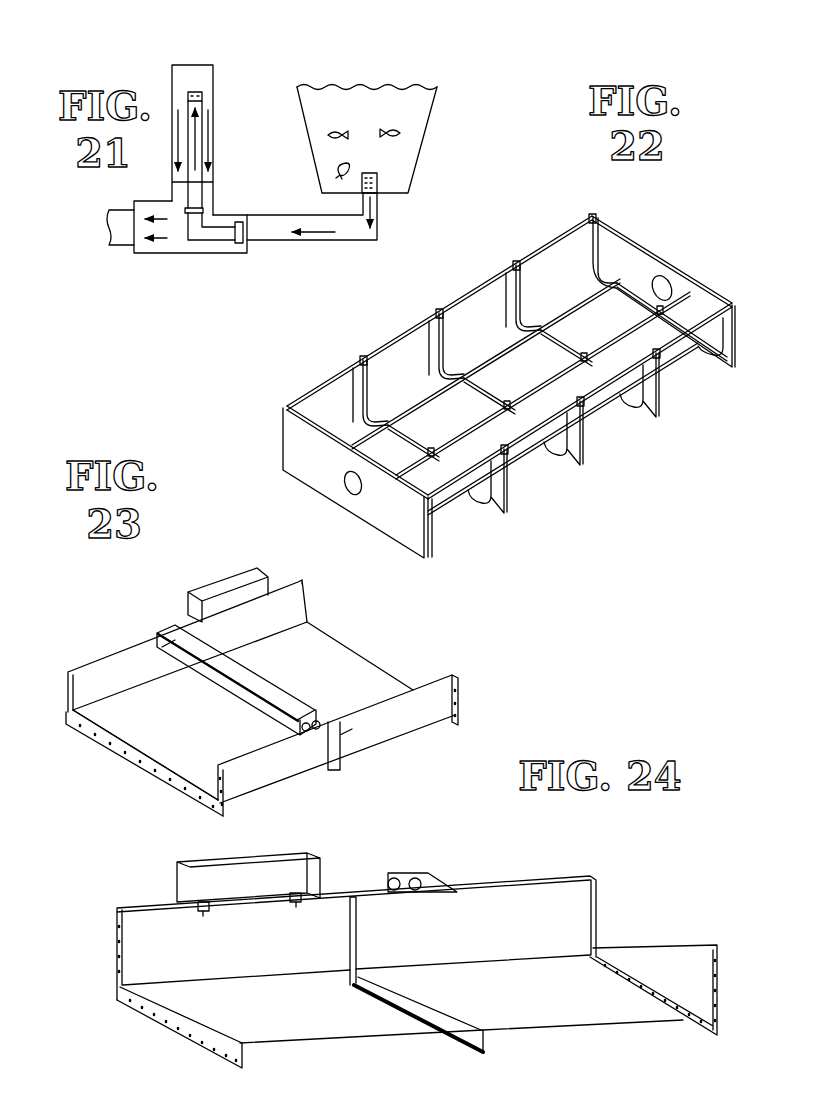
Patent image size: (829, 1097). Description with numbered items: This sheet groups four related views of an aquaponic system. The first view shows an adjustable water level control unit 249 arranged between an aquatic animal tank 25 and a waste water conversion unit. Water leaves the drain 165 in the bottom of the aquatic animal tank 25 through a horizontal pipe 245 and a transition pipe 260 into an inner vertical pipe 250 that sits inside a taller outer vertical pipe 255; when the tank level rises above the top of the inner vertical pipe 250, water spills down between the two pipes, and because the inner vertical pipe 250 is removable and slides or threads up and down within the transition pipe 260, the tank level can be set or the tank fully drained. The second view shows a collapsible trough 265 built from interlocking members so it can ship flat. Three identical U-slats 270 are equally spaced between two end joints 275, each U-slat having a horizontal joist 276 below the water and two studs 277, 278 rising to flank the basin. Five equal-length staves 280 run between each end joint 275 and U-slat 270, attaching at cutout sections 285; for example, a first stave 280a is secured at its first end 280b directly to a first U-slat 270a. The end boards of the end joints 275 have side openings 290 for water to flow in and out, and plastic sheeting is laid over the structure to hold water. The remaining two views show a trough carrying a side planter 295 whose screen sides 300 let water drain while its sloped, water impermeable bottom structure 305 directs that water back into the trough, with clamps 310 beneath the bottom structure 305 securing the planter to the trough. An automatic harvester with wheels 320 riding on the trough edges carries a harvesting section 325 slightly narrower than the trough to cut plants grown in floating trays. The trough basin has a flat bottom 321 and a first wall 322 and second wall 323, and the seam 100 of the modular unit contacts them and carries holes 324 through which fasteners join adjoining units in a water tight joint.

In FIG. 21, the adjustable water level control unit 249 is at (148, 61).
In FIG. 21, the outer vertical pipe 255 is at (213, 72).
In FIG. 21, the inner vertical pipe 250 is at (197, 134).
In FIG. 21, the transition pipe 260 is at (217, 237).
In FIG. 21, the horizontal pipe 245 is at (318, 233).
In FIG. 21, the aquatic animal tank 25 is at (354, 105).
In FIG. 21, the drain 165 is at (378, 195).
In FIG. 22, the collapsible trough 265 is at (697, 240).
In FIG. 22, the end joints 275 is at (322, 473).
In FIG. 22, the horizontal joist 276 is at (480, 392).
In FIG. 22, the stud 277 is at (443, 342).
In FIG. 22, the stud 278 is at (578, 435).
In FIG. 22, the staves 280 is at (465, 302).
In FIG. 22, the first stave 280a is at (489, 432).
In FIG. 22, the first end 280b is at (429, 456).
In FIG. 22, the cutout sections 285 is at (361, 359).
In FIG. 22, the U-slats 270 is at (657, 398).
In FIG. 22, the first U-slat 270a is at (498, 497).
In FIG. 22, the side openings 290 is at (348, 491).
In FIG. 23, the side planter 295 is at (215, 571).
In FIG. 23, the screen sides 300 is at (200, 610).
In FIG. 24, the screen sides 300 is at (317, 873).
In FIG. 24, the bottom structure 305 is at (257, 897).
In FIG. 24, the clamps 310 is at (204, 912).
In FIG. 23, the wheels 320 is at (343, 733).
In FIG. 24, the wheels 320 is at (418, 872).
In FIG. 23, the flat bottom 321 is at (153, 747).
In FIG. 24, the flat bottom 321 is at (517, 1009).
In FIG. 23, the first wall 322 is at (120, 677).
In FIG. 24, the first wall 322 is at (563, 907).
In FIG. 23, the second wall 323 is at (245, 770).
In FIG. 24, the second wall 323 is at (668, 963).
In FIG. 23, the holes 324 is at (106, 737).
In FIG. 24, the holes 324 is at (128, 1007).
In FIG. 23, the harvesting section 325 is at (288, 707).
In FIG. 24, the harvesting section 325 is at (440, 881).
In FIG. 23, the seam 100 is at (289, 670).